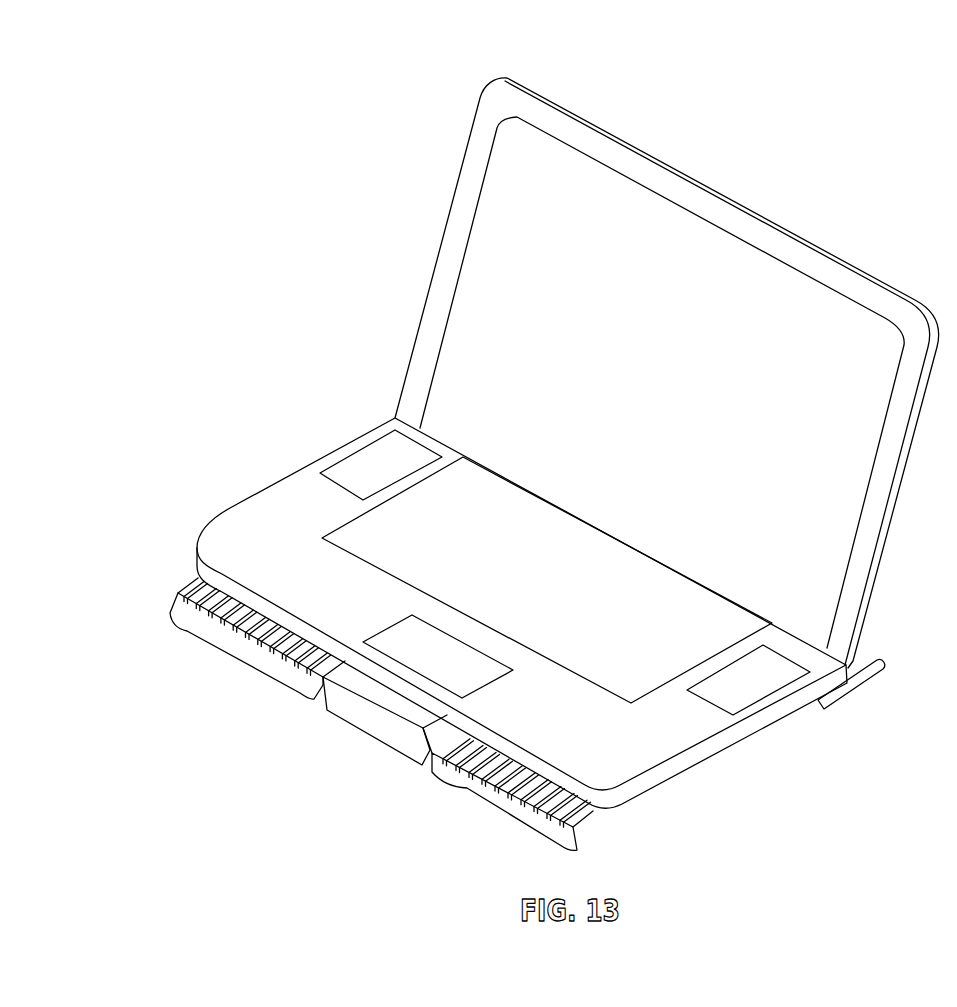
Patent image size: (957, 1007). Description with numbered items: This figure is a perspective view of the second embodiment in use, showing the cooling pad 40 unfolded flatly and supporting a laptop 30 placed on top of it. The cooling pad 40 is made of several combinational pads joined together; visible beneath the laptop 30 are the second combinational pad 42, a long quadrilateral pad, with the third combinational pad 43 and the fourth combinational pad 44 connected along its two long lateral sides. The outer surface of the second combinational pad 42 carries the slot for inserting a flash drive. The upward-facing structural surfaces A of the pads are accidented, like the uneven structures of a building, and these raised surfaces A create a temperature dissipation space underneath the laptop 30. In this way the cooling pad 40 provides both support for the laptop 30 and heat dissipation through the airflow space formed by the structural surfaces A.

The laptop 30 is at (283, 513).
The cooling pad 40 is at (381, 736).
The second combinational pad 42 is at (372, 720).
The third combinational pad 43 is at (491, 816).
The fourth combinational pad 44 is at (252, 647).
The structural surfaces A is at (210, 610).